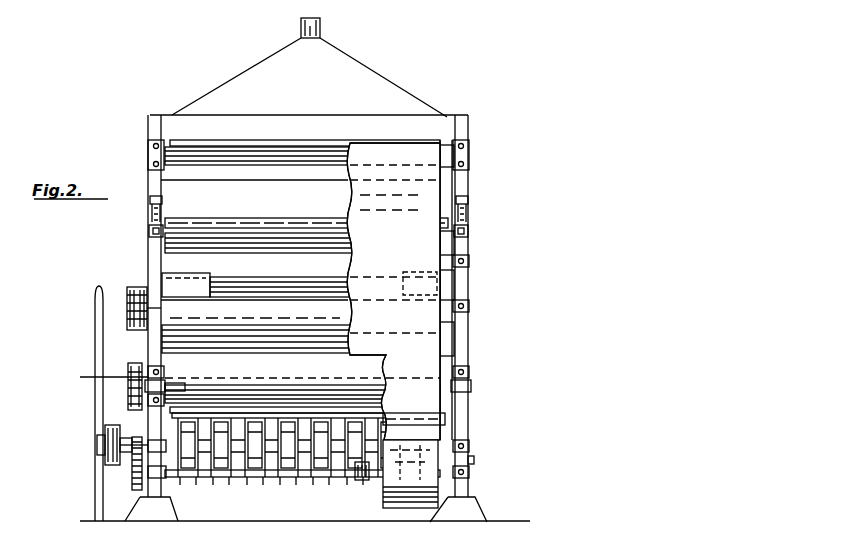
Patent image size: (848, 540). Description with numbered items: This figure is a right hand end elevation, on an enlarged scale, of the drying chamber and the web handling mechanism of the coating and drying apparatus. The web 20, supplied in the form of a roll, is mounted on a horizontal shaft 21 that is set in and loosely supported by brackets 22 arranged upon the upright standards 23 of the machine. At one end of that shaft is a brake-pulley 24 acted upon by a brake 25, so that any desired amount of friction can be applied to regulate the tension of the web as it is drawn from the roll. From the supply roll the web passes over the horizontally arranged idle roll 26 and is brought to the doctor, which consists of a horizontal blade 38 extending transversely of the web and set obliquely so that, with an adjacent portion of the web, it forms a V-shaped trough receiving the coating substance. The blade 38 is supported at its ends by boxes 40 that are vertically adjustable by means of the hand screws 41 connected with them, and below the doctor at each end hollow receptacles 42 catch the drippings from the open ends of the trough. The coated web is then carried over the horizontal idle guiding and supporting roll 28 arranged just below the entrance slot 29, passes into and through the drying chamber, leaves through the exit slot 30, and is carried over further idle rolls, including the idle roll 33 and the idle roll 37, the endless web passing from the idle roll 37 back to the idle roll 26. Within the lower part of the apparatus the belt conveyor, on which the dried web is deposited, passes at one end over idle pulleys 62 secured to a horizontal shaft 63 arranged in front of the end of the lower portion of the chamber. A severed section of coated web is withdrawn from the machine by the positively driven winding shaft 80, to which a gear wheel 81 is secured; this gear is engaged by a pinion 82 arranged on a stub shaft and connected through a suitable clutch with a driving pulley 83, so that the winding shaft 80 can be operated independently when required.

The web 20 is at (360, 200).
The horizontal shaft 21 is at (190, 385).
The brackets 22 is at (165, 385).
The upright standards 23 is at (148, 337).
The brake-pulley 24 is at (128, 380).
The brake 25 is at (135, 368).
The idle roll 26 is at (318, 250).
The idle guiding and supporting roll 28 is at (330, 152).
The entrance slot 29 is at (455, 143).
The exit slot 30 is at (440, 418).
The idle roll 33 is at (272, 395).
The idle roll 37 is at (275, 348).
The blade 38 is at (200, 224).
The boxes 40 is at (148, 232).
The hand screws 41 is at (148, 200).
The hollow receptacles 42 is at (195, 275).
The idle pulleys 62 is at (262, 455).
The horizontal shaft 63 is at (440, 455).
The winding shaft 80 is at (358, 474).
The gear wheel 81 is at (132, 475).
The pinion 82 is at (140, 434).
The driving pulley 83 is at (110, 430).